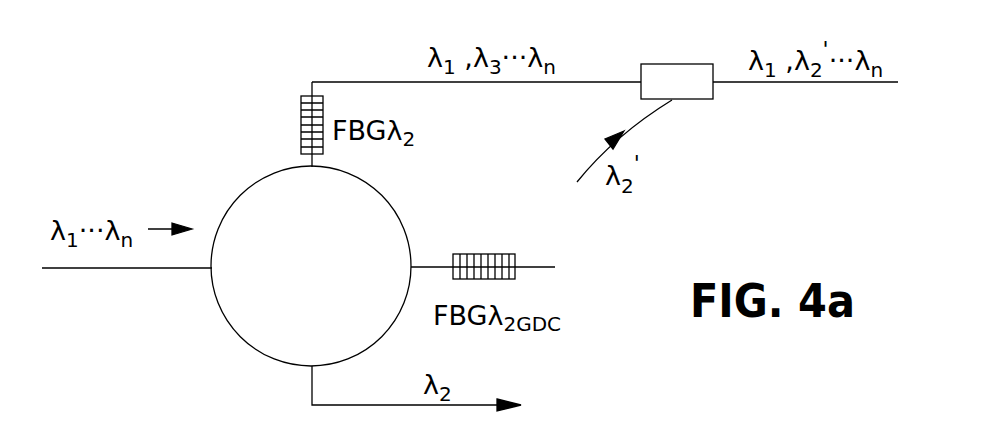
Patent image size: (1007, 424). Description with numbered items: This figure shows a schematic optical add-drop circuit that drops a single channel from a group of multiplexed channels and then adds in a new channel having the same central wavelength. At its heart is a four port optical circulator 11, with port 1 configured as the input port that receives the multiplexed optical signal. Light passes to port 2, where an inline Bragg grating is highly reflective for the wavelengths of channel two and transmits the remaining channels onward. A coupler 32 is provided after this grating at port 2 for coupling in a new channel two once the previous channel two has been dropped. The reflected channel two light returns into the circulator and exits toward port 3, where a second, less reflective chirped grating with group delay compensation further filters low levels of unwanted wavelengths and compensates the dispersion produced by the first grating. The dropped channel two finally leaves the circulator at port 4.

The optical circulator 11 is at (263, 303).
The coupler 32 is at (699, 64).
The port 1 is at (143, 269).
The port 2 is at (312, 143).
The port 3 is at (470, 269).
The port 4 is at (413, 376).